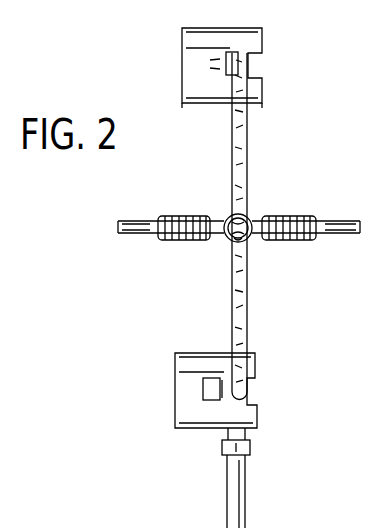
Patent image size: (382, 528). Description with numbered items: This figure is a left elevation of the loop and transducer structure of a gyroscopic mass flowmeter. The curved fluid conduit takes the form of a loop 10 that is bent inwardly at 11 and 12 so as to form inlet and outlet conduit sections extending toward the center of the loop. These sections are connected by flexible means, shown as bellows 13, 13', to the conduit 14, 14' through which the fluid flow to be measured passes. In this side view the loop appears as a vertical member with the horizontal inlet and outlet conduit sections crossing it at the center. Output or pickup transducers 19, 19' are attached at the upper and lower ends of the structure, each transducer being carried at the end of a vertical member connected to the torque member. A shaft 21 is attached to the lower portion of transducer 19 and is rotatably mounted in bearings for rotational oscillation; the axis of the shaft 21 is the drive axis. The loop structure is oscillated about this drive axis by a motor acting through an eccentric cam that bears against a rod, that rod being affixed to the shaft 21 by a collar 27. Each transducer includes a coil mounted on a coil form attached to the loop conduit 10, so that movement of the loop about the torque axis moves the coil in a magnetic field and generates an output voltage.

The loop 10 is at (238, 153).
The inward bend of loop 11 is at (246, 214).
The inward bend of loop 12 is at (246, 240).
The bellows 13 is at (290, 208).
The bellows 13' is at (184, 208).
The conduit 14 is at (315, 249).
The conduit 14' is at (167, 247).
The pickup transducer 19 is at (191, 390).
The pickup transducer 19' is at (197, 68).
The shaft 21 is at (232, 491).
The collar 27 is at (232, 448).